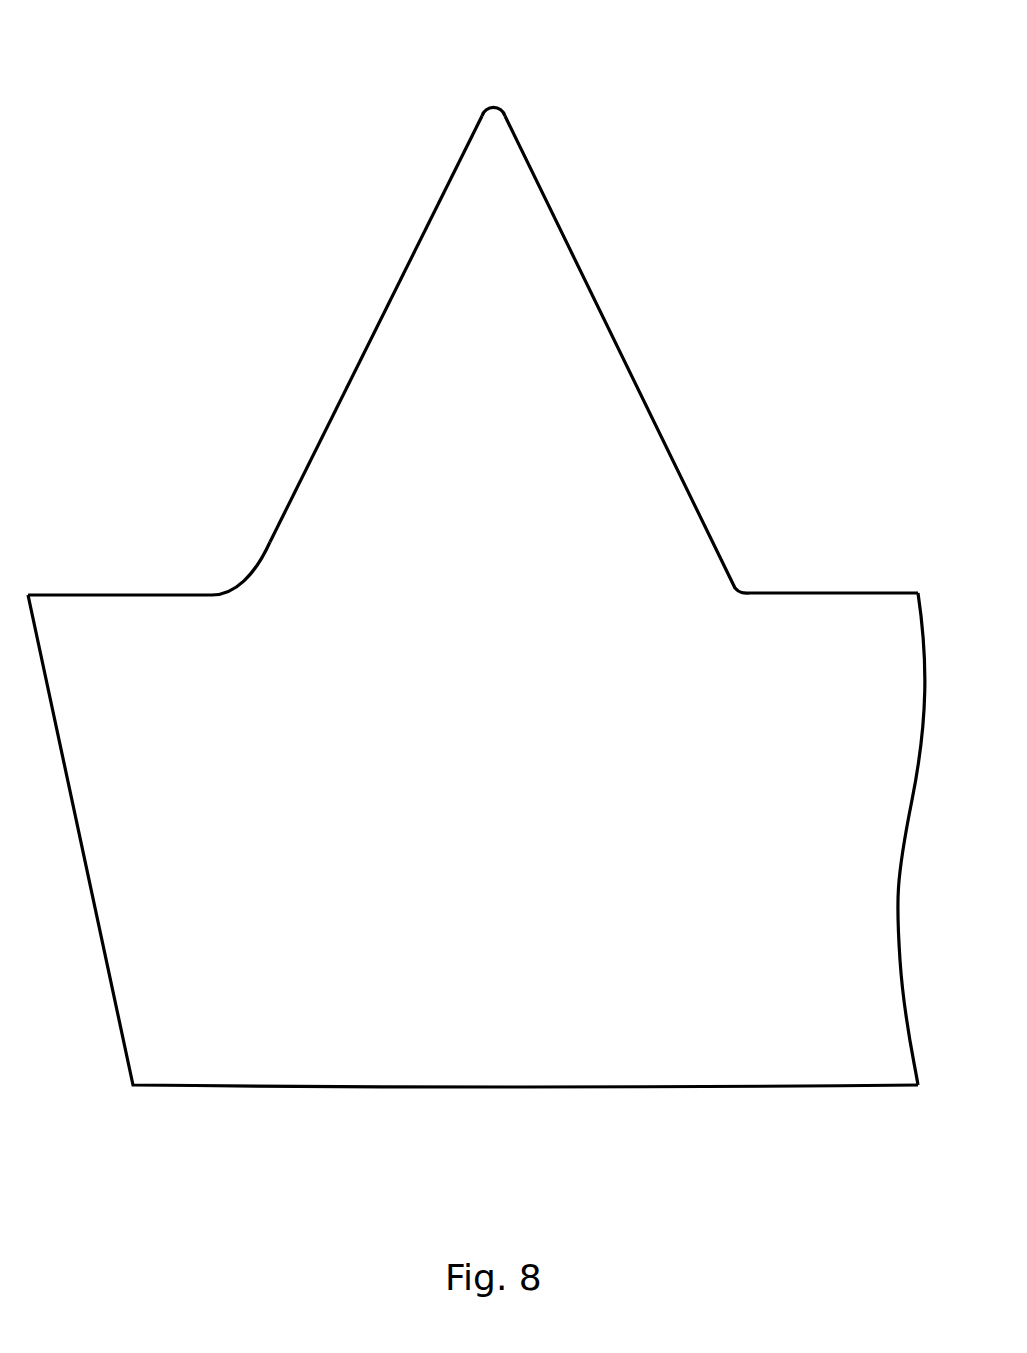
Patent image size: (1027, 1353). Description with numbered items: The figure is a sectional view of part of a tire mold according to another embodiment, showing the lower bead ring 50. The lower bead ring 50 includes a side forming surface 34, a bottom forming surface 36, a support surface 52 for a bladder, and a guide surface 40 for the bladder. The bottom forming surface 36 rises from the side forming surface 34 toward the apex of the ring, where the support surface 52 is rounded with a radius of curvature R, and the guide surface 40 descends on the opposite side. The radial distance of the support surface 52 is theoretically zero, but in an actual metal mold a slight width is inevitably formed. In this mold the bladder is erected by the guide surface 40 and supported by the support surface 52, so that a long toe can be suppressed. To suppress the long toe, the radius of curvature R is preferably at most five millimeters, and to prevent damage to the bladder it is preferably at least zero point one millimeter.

The side forming surface 34 is at (122, 594).
The bottom forming surface 36 is at (372, 320).
The guide surface 40 is at (641, 388).
The lower bead ring 50 is at (465, 1045).
The support surface 52 is at (492, 100).
The radius of curvature R is at (492, 108).